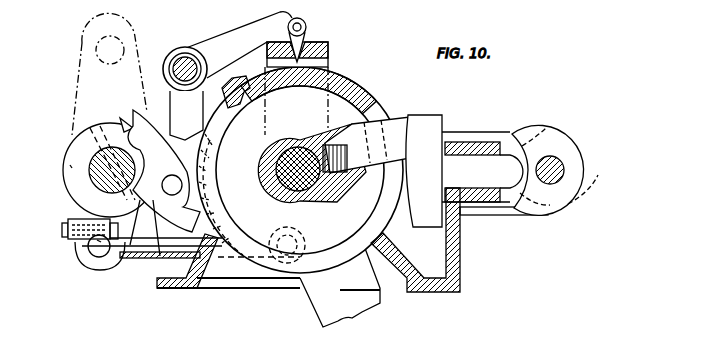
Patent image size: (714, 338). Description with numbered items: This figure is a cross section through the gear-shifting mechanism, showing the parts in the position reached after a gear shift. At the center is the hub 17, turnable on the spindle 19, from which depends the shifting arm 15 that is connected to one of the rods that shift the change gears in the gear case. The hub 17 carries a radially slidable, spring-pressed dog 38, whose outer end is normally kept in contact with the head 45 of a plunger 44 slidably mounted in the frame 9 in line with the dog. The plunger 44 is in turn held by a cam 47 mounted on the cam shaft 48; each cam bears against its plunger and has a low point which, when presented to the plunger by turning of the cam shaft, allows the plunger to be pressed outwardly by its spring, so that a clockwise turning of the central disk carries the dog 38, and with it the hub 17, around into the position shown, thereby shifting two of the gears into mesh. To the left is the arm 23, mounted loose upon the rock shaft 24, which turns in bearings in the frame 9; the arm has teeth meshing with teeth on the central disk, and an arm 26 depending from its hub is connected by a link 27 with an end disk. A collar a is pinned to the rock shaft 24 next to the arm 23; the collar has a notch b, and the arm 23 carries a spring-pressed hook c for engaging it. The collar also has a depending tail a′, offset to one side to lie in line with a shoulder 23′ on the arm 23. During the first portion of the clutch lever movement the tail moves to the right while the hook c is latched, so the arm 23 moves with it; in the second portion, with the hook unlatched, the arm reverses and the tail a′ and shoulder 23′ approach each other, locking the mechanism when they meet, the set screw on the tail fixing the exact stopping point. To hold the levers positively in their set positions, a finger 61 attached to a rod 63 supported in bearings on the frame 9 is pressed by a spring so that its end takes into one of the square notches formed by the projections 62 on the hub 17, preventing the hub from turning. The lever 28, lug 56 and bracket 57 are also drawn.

The frame 9 is at (462, 275).
The arm 15 is at (318, 307).
The hub 17 is at (367, 100).
The spindle 19 is at (289, 148).
The arm 23 is at (186, 132).
The shoulder 23′ is at (160, 262).
The rock shaft 24 is at (92, 175).
The arm 26 is at (78, 258).
The link 27 is at (147, 257).
The lever 28 is at (78, 72).
The dog 38 is at (408, 117).
The plunger 44 is at (475, 158).
The head 45 is at (427, 216).
The cam 47 is at (546, 127).
The cam shaft 48 is at (564, 169).
The lug 56 is at (312, 27).
The bracket 57 is at (330, 50).
The finger 61 is at (236, 33).
The projection 62 is at (236, 85).
The rod 63 is at (187, 57).
The collar a is at (70, 165).
The tail a′ is at (100, 242).
The notch b is at (125, 117).
The spring-pressed hook c is at (147, 125).